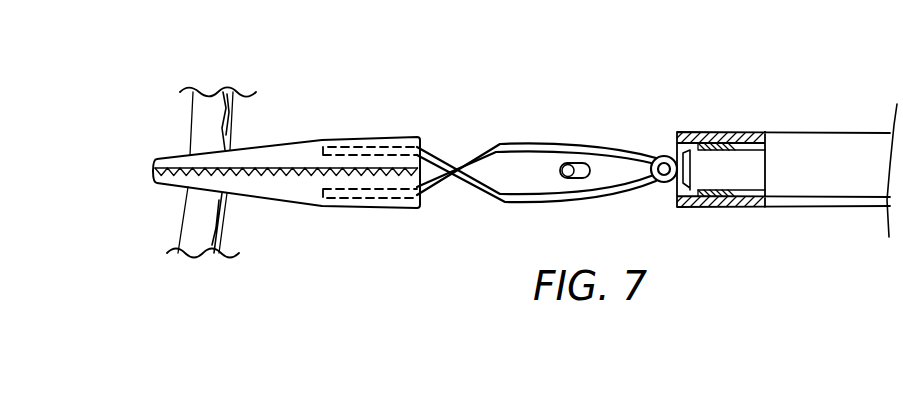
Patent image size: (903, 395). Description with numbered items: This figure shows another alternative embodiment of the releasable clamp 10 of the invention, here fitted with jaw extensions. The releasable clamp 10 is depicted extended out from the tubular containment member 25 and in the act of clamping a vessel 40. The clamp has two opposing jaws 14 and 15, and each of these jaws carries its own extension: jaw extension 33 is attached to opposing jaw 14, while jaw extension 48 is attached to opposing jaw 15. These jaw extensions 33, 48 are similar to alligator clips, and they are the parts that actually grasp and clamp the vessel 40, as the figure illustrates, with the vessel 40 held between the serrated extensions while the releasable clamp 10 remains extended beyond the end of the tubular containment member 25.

The releasable clamp 10 is at (553, 122).
The opposing jaw 14 is at (370, 147).
The opposing jaw 15 is at (397, 193).
The tubular containment member 25 is at (795, 136).
The jaw extension 33 is at (290, 203).
The vessel 40 is at (225, 217).
The jaw extension 48 is at (258, 147).